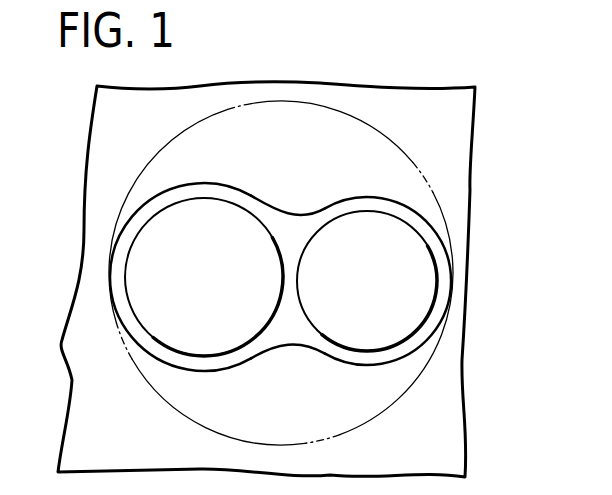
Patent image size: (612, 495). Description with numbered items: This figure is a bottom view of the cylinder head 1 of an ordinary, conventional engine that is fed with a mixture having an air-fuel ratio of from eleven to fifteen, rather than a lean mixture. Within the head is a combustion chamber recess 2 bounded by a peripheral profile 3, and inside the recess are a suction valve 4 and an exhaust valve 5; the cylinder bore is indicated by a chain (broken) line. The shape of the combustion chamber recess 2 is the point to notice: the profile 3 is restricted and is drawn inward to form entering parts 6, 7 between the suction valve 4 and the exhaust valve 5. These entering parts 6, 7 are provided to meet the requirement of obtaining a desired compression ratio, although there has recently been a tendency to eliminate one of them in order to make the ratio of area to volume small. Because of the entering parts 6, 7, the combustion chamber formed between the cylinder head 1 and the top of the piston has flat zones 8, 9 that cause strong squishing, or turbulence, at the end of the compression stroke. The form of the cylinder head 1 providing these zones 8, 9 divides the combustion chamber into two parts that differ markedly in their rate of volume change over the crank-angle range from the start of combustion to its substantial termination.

The cylinder head 1 is at (451, 132).
The combustion chamber recess 2 is at (273, 333).
The peripheral profile 3 is at (177, 370).
The suction valve 4 is at (155, 318).
The exhaust valve 5 is at (378, 228).
The entering part 6 is at (302, 347).
The entering part 7 is at (267, 202).
The flat zone 8 is at (378, 392).
The flat zone 9 is at (340, 125).